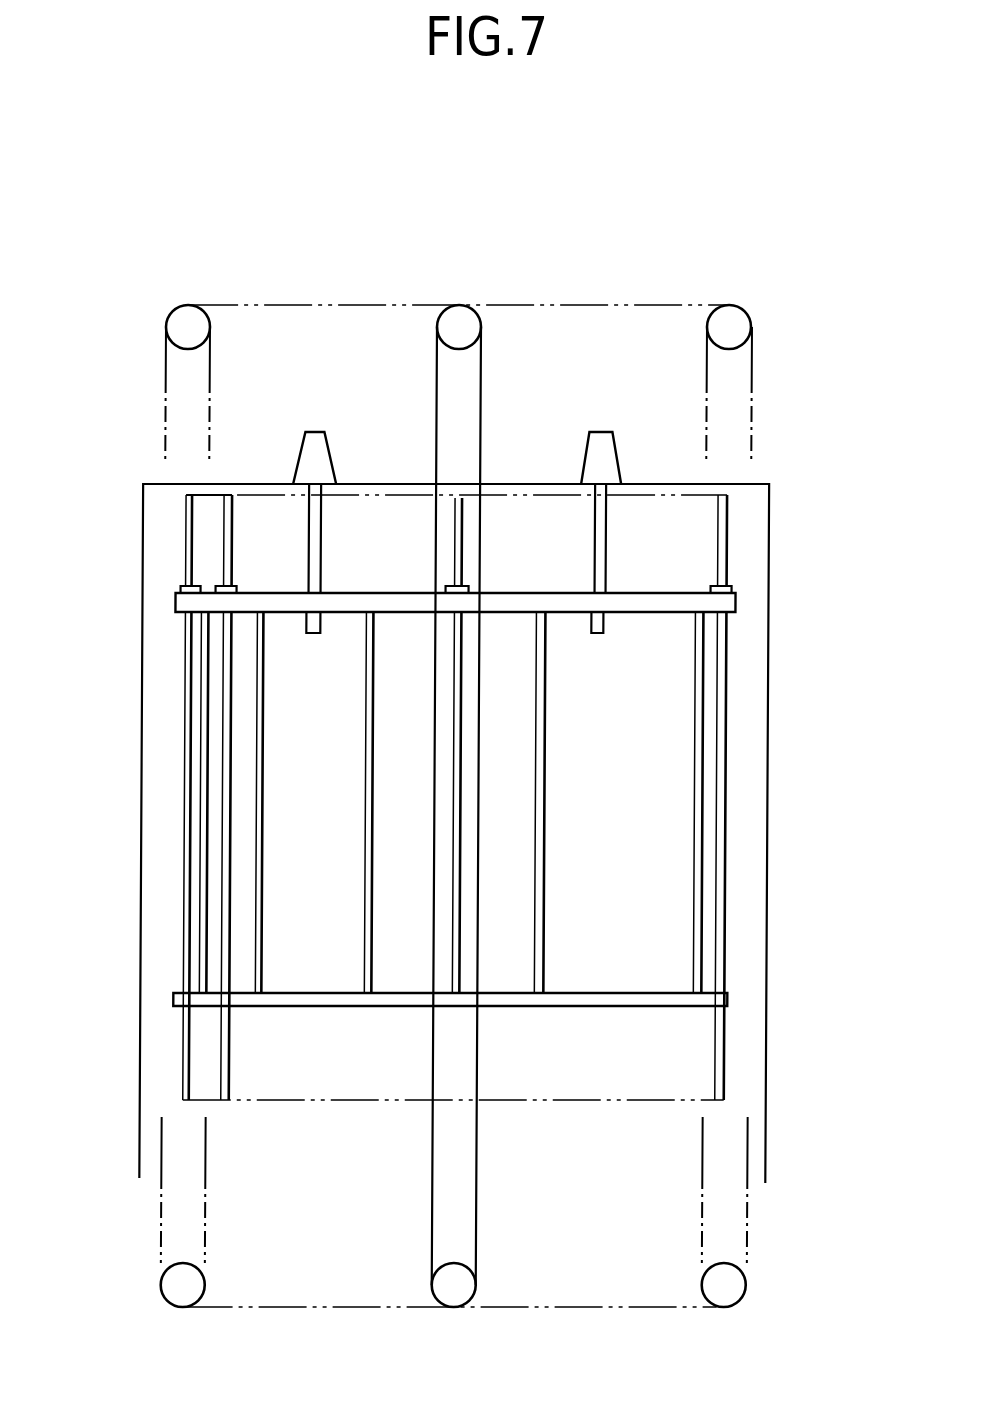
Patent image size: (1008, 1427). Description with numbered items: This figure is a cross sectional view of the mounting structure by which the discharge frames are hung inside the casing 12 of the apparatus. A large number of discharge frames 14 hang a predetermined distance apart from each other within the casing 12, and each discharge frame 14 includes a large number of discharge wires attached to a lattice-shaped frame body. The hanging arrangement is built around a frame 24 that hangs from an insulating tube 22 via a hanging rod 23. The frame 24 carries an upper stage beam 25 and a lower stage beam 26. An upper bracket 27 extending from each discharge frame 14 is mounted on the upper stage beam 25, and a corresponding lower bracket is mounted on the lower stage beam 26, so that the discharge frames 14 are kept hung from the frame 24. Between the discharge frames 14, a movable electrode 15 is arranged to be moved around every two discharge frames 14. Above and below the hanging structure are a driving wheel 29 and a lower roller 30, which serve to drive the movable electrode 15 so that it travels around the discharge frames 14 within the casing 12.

The casing 12 is at (752, 662).
The discharge frame 14 is at (188, 785).
The movable electrode 15 is at (484, 366).
The insulating tube 22 is at (617, 452).
The hanging rod 23 is at (607, 530).
The frame 24 is at (703, 893).
The upper stage beam 25 is at (650, 602).
The lower stage beam 26 is at (667, 1010).
The upper bracket 27 is at (184, 591).
The driving wheel 29 is at (729, 320).
The lower roller 30 is at (740, 1290).